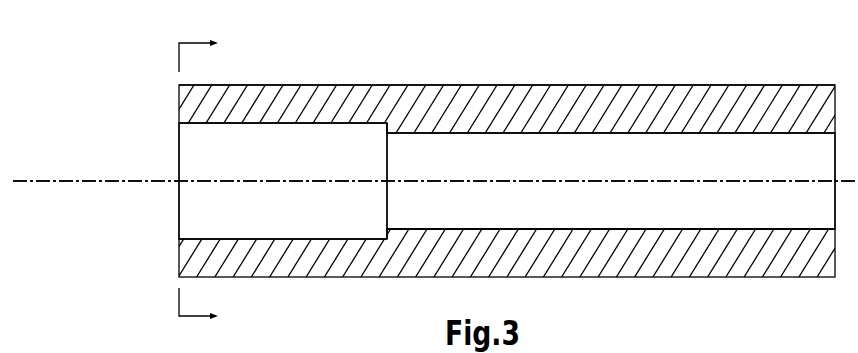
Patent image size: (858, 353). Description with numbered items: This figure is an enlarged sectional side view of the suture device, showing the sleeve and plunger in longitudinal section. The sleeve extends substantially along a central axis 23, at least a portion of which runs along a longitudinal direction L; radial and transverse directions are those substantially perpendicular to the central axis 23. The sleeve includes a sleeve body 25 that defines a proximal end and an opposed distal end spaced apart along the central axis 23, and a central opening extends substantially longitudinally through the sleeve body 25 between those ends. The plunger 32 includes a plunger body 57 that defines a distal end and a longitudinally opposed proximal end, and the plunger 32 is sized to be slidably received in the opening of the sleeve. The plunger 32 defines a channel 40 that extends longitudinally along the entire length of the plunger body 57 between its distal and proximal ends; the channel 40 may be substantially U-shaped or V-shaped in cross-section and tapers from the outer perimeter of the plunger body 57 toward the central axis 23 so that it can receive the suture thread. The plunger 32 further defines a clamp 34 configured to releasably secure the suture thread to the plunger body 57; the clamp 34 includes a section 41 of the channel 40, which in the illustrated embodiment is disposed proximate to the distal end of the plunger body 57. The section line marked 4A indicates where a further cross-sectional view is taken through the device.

The central axis 23 is at (90, 182).
The longitudinal direction L is at (40, 181).
The sleeve body 25 is at (273, 84).
The plunger 32 is at (577, 110).
The plunger body 57 is at (442, 84).
The channel 40 is at (313, 212).
The section 41 is at (567, 208).
The clamp 34 is at (622, 215).
The section line 4A is at (212, 180).